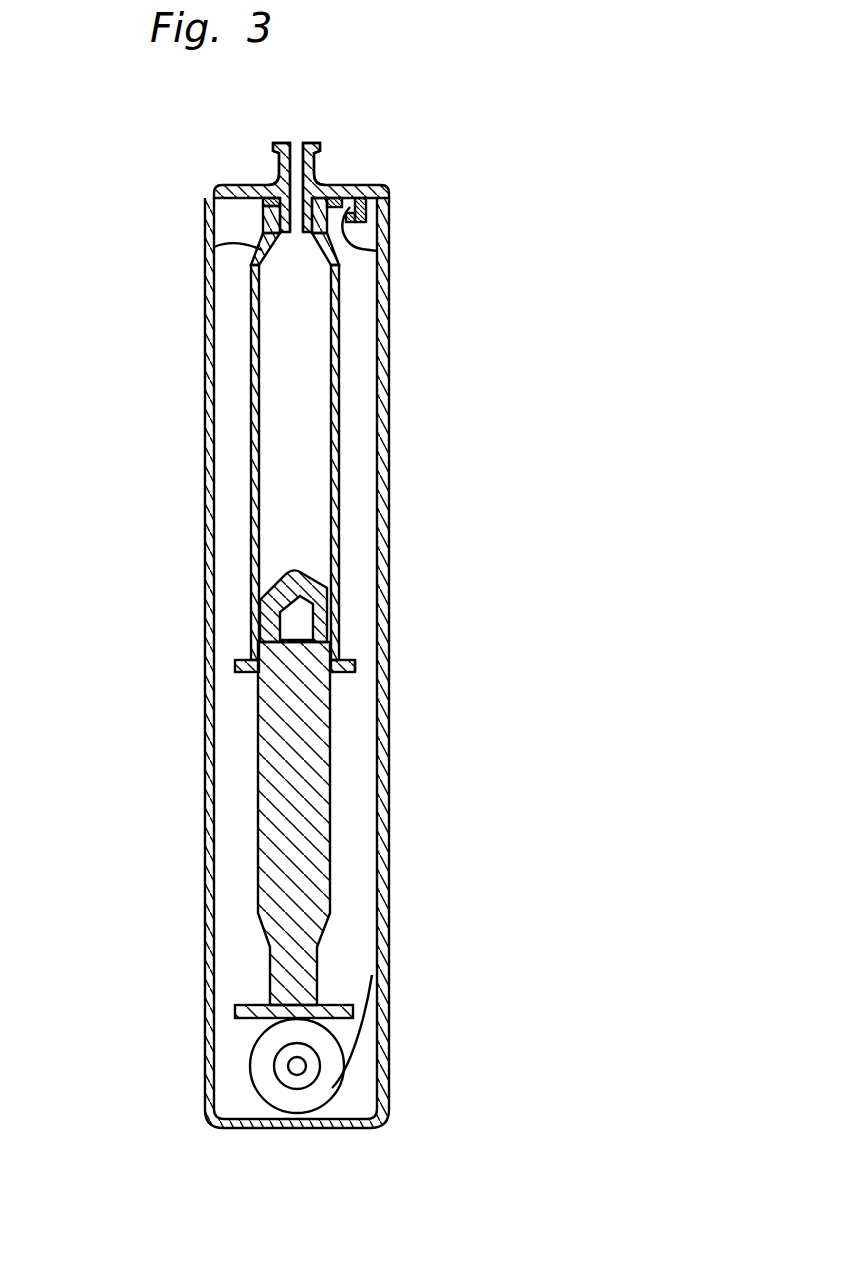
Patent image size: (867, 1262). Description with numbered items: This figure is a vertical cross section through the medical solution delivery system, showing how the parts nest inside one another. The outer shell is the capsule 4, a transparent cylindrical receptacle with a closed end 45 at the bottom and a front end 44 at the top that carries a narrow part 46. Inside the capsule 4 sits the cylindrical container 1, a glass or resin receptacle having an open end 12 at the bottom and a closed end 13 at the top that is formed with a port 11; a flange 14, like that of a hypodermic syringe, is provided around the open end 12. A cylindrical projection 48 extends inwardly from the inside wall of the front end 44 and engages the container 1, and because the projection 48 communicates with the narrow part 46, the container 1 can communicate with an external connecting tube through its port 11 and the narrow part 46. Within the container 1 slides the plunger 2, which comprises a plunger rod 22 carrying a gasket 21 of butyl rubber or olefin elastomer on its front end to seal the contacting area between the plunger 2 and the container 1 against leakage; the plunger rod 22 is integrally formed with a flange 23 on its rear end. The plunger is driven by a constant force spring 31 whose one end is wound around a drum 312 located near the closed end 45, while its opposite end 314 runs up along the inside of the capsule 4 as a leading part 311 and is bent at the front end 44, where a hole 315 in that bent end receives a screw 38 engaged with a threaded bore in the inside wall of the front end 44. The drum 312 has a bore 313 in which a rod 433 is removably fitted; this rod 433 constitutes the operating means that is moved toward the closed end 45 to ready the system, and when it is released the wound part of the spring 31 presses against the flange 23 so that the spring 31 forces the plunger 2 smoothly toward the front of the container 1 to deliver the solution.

The cylindrical container 1 is at (340, 345).
The plunger 2 is at (330, 811).
The capsule 4 is at (207, 515).
The port 11 is at (276, 214).
The open end 12 is at (340, 673).
The closed end 13 is at (262, 248).
The flange 14 is at (352, 665).
The gasket 21 is at (318, 594).
The plunger rod 22 is at (257, 798).
The flange 23 is at (342, 1002).
The constant force spring 31 is at (377, 512).
The screw 38 is at (357, 203).
The front end 44 is at (240, 183).
The closed end 45 is at (237, 1128).
The narrow part 46 is at (318, 156).
The cylindrical projection 48 is at (270, 203).
The leading part 311 is at (375, 408).
The drum 312 is at (273, 1065).
The bore 313 is at (306, 1069).
The opposite end 314 is at (380, 260).
The hole 315 is at (385, 207).
The rod 433 is at (288, 1060).